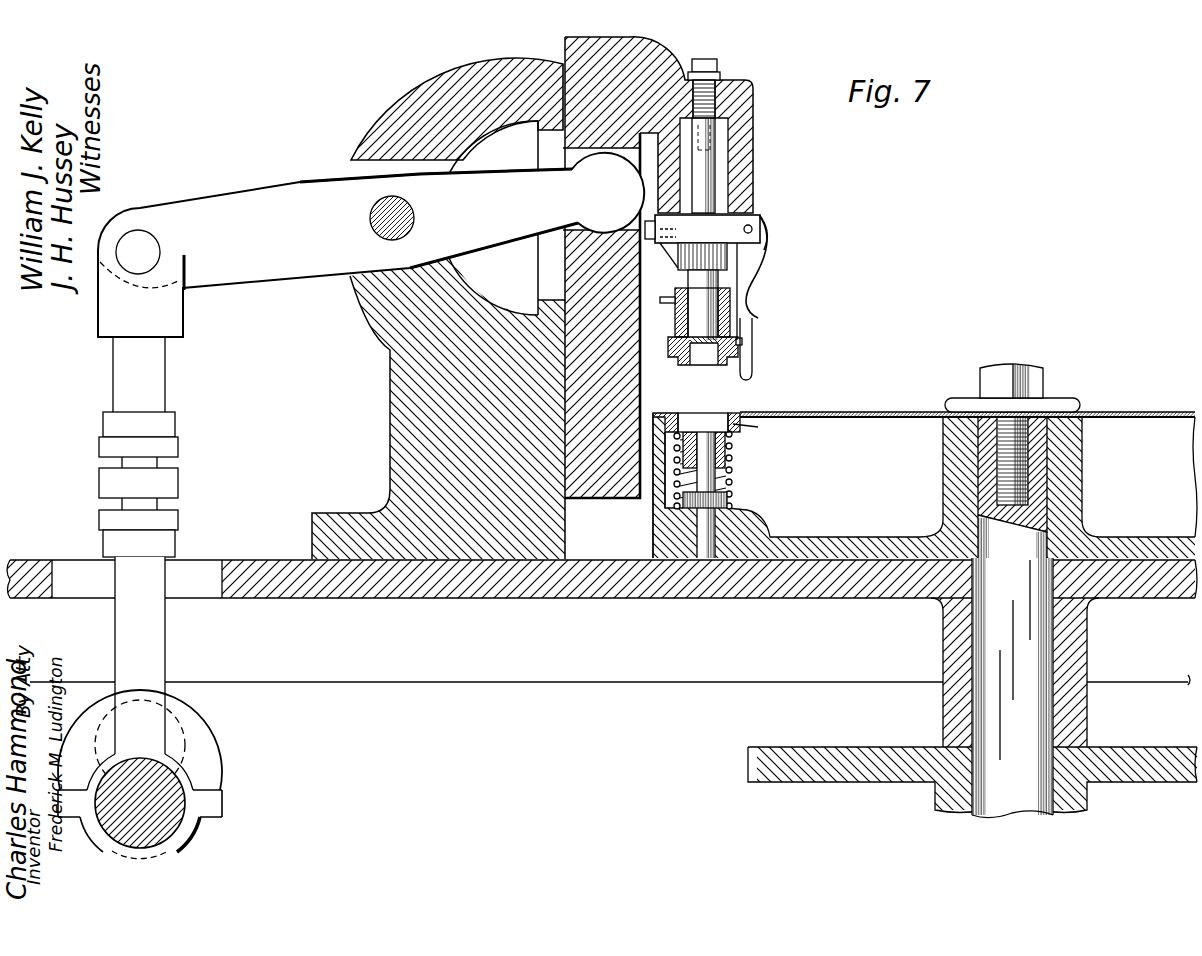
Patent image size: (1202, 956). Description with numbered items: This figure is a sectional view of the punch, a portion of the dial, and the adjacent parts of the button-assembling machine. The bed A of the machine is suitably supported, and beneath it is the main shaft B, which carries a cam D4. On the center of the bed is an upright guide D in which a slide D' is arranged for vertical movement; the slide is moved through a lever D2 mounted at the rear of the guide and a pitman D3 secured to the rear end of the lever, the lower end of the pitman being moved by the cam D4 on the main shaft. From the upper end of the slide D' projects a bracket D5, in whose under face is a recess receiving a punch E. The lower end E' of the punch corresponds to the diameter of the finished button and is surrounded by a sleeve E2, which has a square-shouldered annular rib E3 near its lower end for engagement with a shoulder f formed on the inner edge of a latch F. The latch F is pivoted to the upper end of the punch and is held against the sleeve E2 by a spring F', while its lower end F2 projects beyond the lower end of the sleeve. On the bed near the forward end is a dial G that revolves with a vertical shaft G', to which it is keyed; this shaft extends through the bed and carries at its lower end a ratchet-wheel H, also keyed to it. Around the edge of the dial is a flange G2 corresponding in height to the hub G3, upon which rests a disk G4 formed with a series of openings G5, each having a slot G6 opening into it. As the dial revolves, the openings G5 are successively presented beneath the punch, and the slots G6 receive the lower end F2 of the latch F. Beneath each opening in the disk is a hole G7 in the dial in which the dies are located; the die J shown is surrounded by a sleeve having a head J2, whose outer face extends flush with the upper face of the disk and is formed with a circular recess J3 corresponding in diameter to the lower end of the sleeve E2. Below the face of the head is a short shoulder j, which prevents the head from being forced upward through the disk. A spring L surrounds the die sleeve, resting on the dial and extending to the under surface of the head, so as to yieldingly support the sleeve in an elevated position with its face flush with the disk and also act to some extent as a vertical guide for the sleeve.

The bed A is at (257, 553).
The main shaft B is at (172, 789).
The upright guide D is at (438, 298).
The slide D' is at (617, 267).
The lever D2 is at (371, 245).
The pitman D3 is at (178, 445).
The cam D4 is at (200, 725).
The bracket D5 is at (753, 110).
The punch E is at (721, 217).
The lower end of punch E' is at (726, 306).
The sleeve E2 is at (732, 330).
The annular rib E3 is at (737, 347).
The latch F is at (765, 278).
The spring F' is at (781, 236).
The lower end of latch F2 is at (752, 372).
The shoulder f is at (742, 342).
The dial G is at (924, 485).
The vertical shaft G' is at (1012, 666).
The flange G2 is at (651, 498).
The hub G3 is at (1082, 438).
The disk G4 is at (838, 412).
The openings G5 is at (672, 416).
The slot G6 is at (748, 413).
The hole G7 is at (728, 512).
The ratchet-wheel H is at (853, 757).
The die J is at (706, 474).
The head J2 is at (735, 421).
The circular recess J3 is at (700, 416).
The shoulder j is at (742, 428).
The spring L is at (731, 451).